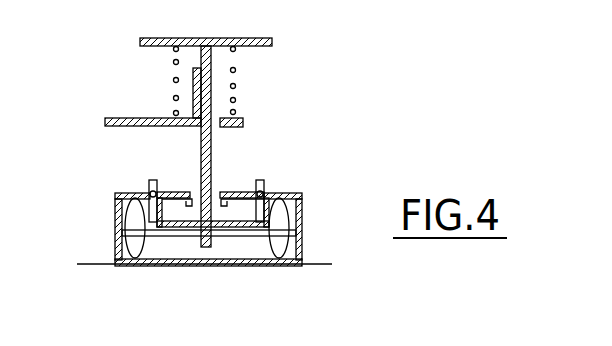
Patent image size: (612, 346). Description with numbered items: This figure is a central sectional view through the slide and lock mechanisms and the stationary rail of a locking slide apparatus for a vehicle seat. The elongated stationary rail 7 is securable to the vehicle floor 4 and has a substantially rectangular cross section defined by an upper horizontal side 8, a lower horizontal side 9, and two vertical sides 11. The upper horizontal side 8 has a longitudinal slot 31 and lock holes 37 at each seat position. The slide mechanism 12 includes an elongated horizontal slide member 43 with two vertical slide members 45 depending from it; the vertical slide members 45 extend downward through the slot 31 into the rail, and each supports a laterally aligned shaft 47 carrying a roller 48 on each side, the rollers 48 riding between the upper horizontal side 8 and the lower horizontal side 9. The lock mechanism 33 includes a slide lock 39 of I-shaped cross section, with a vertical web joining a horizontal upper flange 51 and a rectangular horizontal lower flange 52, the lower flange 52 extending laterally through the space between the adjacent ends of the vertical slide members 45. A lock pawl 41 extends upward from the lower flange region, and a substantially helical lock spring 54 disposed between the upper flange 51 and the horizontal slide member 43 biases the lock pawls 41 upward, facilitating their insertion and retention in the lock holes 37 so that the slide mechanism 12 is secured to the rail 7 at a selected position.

The vehicle floor 4 is at (315, 264).
The stationary rail 7 is at (202, 258).
The upper horizontal side 8 is at (161, 184).
The lower horizontal side 9 is at (236, 255).
The vertical sides 11 is at (118, 220).
The slide mechanism 12 is at (152, 92).
The slot 31 is at (211, 178).
The lock mechanism 33 is at (201, 148).
The lock holes 37 is at (149, 185).
The slide lock 39 is at (211, 133).
The lock pawl 41 is at (264, 185).
The horizontal slide member 43 is at (132, 118).
The vertical slide members 45 is at (200, 133).
The shaft 47 is at (227, 250).
The roller 48 is at (126, 247).
The upper flange 51 is at (243, 38).
The lower flange 52 is at (177, 232).
The lock spring 54 is at (172, 38).